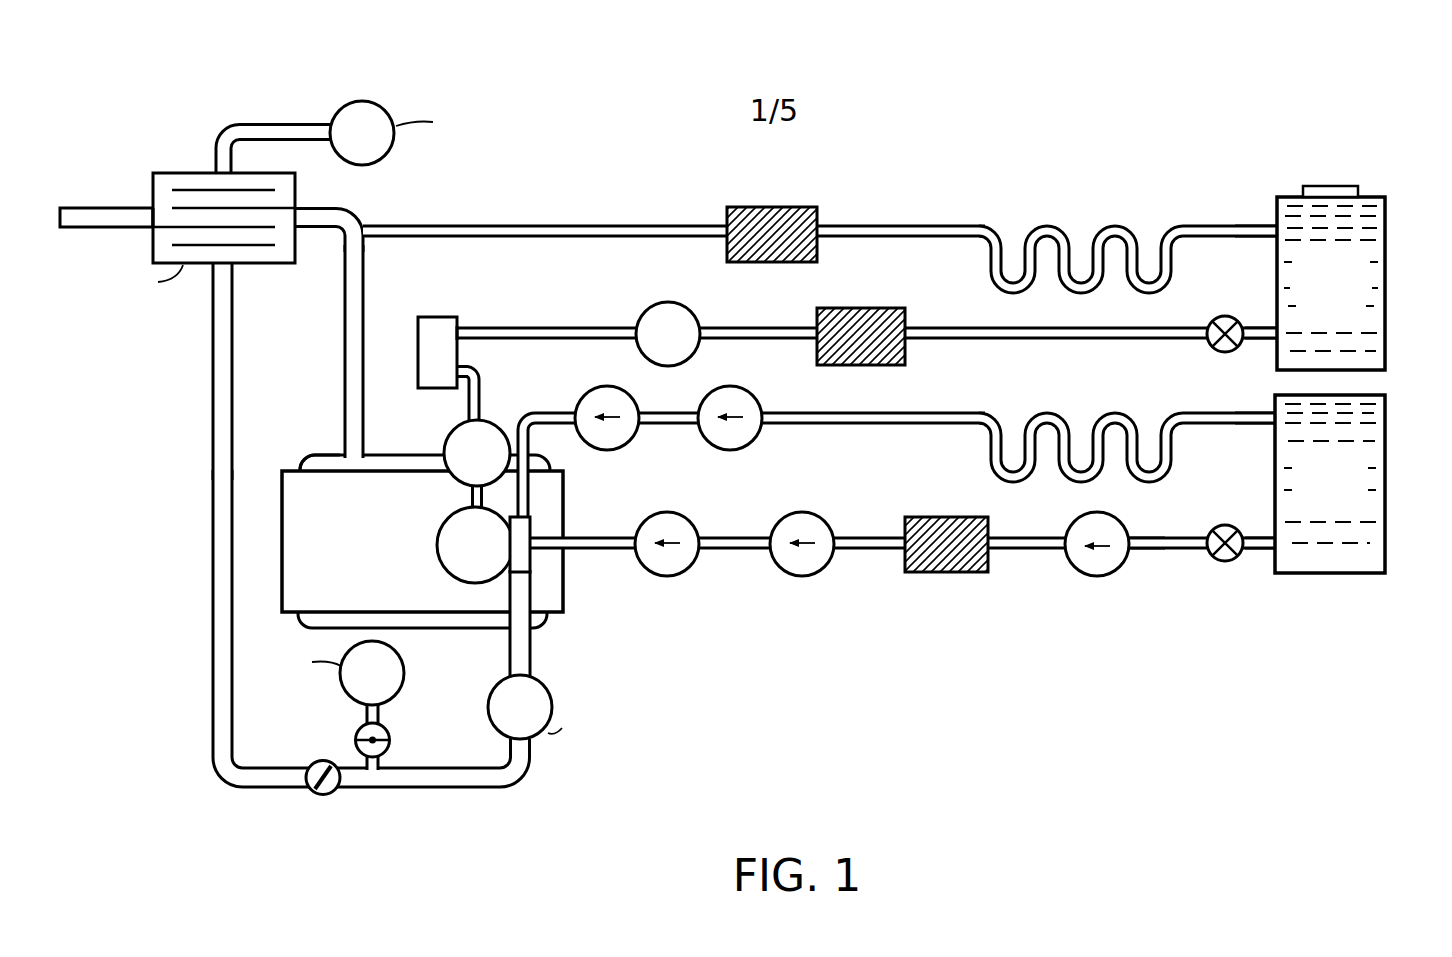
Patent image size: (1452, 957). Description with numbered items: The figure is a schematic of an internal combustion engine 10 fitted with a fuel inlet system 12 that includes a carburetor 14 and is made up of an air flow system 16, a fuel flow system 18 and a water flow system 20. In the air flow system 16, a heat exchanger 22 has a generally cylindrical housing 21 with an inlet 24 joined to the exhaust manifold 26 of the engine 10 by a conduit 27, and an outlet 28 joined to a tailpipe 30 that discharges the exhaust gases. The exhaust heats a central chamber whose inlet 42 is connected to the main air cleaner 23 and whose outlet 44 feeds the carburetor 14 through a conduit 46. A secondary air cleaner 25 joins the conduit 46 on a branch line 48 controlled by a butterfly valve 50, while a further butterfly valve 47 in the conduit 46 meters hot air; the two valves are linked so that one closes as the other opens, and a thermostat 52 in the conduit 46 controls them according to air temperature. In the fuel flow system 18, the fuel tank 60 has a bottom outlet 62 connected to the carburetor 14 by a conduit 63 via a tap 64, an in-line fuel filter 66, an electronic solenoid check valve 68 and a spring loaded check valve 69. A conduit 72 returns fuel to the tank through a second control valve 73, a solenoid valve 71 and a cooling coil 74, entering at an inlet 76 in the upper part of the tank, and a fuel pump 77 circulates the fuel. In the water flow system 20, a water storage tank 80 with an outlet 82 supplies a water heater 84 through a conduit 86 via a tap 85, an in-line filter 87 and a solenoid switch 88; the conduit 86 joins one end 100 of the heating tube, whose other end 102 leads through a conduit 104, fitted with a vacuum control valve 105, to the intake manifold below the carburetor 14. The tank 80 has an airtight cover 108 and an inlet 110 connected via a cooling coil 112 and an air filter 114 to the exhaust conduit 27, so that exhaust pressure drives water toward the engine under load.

The internal combustion engine 10 is at (565, 596).
The fuel inlet system 12 is at (1013, 152).
The carburetor 14 is at (451, 517).
The air flow system 16 is at (170, 624).
The fuel flow system 18 is at (1144, 577).
The water flow system 20 is at (899, 205).
The housing 21 is at (150, 253).
The heat exchanger 22 is at (176, 218).
The main air cleaner 23 is at (383, 158).
The inlet 24 is at (306, 199).
The secondary air cleaner 25 is at (405, 668).
The exhaust manifold 26 is at (330, 460).
The conduit 27 is at (348, 395).
The outlet 28 is at (141, 203).
The tailpipe 30 is at (98, 228).
The inlet 42 is at (209, 160).
The outlet 44 is at (242, 276).
The conduit 46 is at (219, 497).
The butterfly valve 47 is at (332, 793).
The branch line 48 is at (380, 721).
The butterfly valve 50 is at (357, 733).
The thermostat 52 is at (543, 686).
The fuel tank 60 is at (1386, 478).
The outlet 62 is at (1268, 532).
The conduit 63 is at (729, 537).
The tap 64 is at (1213, 530).
The in-line fuel filter 66 is at (950, 517).
The electronic solenoid check valve 68 is at (790, 576).
The spring loaded check valve 69 is at (663, 513).
The solenoid valve 71 is at (755, 441).
The conduit 72 is at (672, 425).
The second control valve 73 is at (612, 386).
The cooling coil 74 is at (1050, 413).
The inlet 76 is at (1268, 429).
The fuel pump 77 is at (1084, 514).
The water storage tank 80 is at (1350, 254).
The outlet 82 is at (1271, 321).
The water heater 84 is at (418, 340).
The tap 85 is at (1211, 322).
The conduit 86 is at (867, 311).
The in-line filter 87 is at (817, 357).
The solenoid switch 88 is at (664, 301).
The end 100 is at (466, 329).
The end 102 is at (470, 359).
The conduit 104 is at (482, 394).
The vacuum control valve 105 is at (452, 426).
The airtight cover 108 is at (1322, 186).
The inlet 110 is at (1270, 221).
The cooling coil 112 is at (1050, 226).
The air filter 114 is at (727, 212).